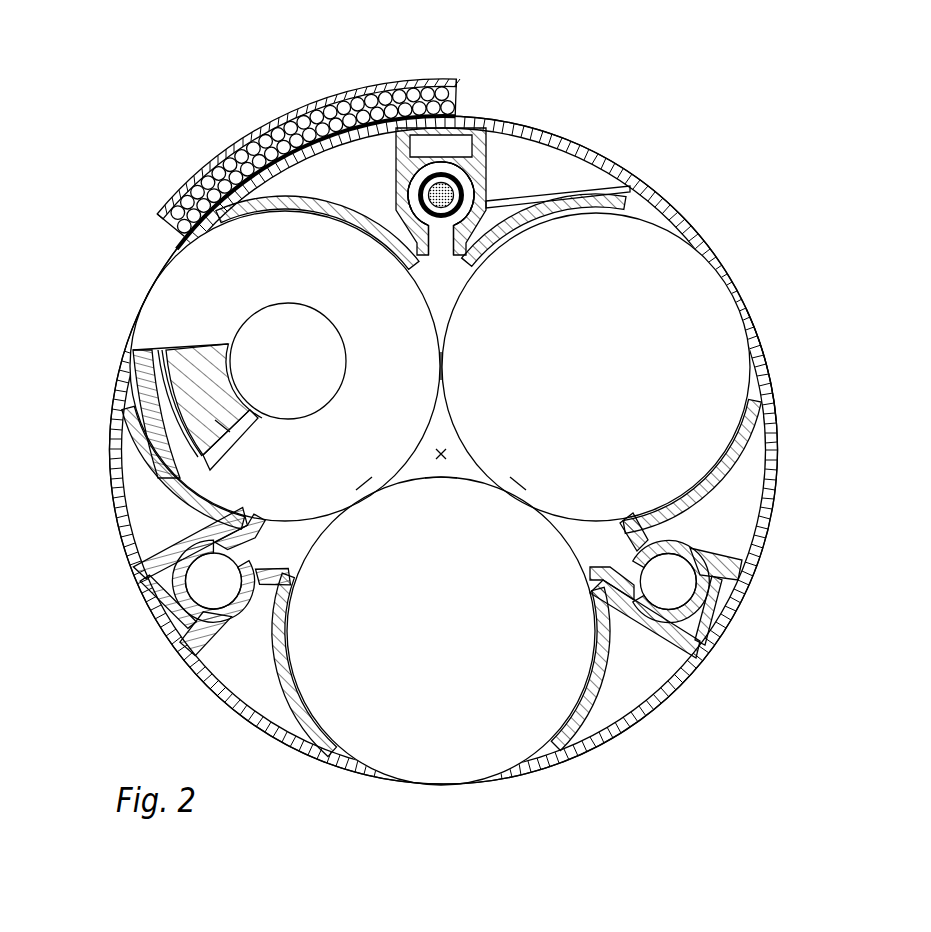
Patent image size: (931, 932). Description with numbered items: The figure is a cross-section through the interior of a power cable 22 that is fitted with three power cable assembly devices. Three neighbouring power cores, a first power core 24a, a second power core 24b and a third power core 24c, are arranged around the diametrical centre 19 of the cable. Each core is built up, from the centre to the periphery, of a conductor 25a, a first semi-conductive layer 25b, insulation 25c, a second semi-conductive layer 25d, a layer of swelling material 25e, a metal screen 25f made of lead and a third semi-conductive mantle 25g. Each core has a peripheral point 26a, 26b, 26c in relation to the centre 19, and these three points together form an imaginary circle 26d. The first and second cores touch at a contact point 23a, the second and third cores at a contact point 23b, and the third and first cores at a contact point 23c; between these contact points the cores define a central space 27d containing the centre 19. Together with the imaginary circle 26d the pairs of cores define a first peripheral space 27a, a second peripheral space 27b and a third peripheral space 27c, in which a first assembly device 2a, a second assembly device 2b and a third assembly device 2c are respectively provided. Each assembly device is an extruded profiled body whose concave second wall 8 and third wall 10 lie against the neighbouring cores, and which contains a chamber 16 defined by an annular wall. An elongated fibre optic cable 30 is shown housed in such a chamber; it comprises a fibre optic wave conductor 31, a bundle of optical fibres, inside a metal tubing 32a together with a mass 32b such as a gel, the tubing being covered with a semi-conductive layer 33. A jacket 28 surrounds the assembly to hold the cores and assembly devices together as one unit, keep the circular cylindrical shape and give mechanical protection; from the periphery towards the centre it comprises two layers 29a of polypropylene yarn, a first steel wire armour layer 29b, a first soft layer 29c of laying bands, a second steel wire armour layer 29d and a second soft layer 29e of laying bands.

The first assembly device 2a is at (528, 122).
The second assembly device 2b is at (780, 470).
The third assembly device 2c is at (162, 620).
The second wall 8 is at (325, 210).
The third wall 10 is at (598, 212).
The chamber 16 is at (229, 593).
The diametrical centre 19 is at (453, 455).
The power cable 22 is at (319, 76).
The contact point 23a is at (446, 360).
The contact point 23b is at (500, 484).
The contact point 23c is at (372, 500).
The first power core 24a is at (178, 315).
The second power core 24b is at (726, 320).
The third power core 24c is at (500, 740).
The conductor 25a is at (310, 377).
The first semi-conductive layer 25b is at (257, 422).
The insulation 25c is at (224, 428).
The second semi-conductive layer 25d is at (188, 390).
The layer of swelling material 25e is at (233, 457).
The metal screen 25f is at (190, 455).
The third semi-conductive mantle 25g is at (137, 373).
The peripheral point 26a is at (134, 325).
The peripheral point 26b is at (735, 286).
The peripheral point 26c is at (440, 786).
The imaginary circle 26d is at (767, 352).
The first peripheral space 27a is at (461, 279).
The second peripheral space 27b is at (623, 556).
The third peripheral space 27c is at (300, 556).
The central space 27d is at (442, 481).
The jacket 28 is at (258, 172).
The layers of yarn 29a is at (152, 217).
The first steel wire armour layer 29b is at (157, 228).
The first soft layer 29c is at (162, 233).
The second steel wire armour layer 29d is at (167, 238).
The second soft layer 29e is at (178, 243).
The fibre optic cable 30 is at (420, 200).
The fibre optic wave conductor 31 is at (456, 196).
The metal tubing 32a is at (560, 187).
The mass 32b is at (410, 188).
The semi-conductive layer 33 is at (474, 168).